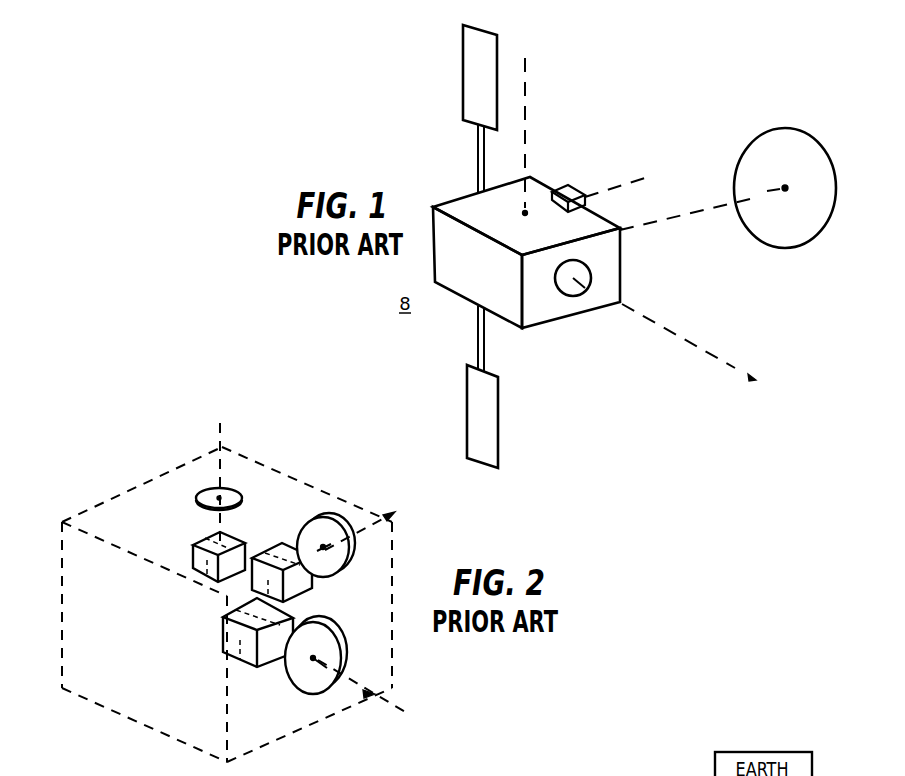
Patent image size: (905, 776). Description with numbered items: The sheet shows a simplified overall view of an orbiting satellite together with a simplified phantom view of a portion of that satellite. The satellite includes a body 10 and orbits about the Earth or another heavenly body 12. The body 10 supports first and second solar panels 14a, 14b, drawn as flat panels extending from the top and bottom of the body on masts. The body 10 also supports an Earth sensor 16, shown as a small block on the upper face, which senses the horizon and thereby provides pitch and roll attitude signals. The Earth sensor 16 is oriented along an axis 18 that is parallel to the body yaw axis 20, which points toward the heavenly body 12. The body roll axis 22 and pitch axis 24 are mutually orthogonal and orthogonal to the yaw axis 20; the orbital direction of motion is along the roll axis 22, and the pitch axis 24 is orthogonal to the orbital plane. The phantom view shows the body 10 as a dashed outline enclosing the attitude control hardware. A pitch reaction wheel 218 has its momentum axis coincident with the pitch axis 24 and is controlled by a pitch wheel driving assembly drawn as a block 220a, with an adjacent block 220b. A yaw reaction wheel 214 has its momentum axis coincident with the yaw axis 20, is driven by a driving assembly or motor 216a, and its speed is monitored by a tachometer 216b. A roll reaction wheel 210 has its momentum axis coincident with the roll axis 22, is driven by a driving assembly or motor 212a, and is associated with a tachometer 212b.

In FIG. 1, the body 10 is at (527, 328).
In FIG. 2, the body 10 is at (103, 500).
In FIG. 1, the Earth or another heavenly body 12 is at (806, 234).
In FIG. 1, the first solar panel 14a is at (467, 393).
In FIG. 1, the second solar panel 14b is at (463, 80).
In FIG. 1, the Earth sensor 16 is at (570, 185).
In FIG. 1, the axis 18 is at (652, 177).
In FIG. 1, the body yaw axis 20 is at (622, 233).
In FIG. 2, the body yaw axis 20 is at (394, 511).
In FIG. 1, the body roll axis 22 is at (663, 333).
In FIG. 2, the body roll axis 22 is at (398, 700).
In FIG. 1, the pitch axis 24 is at (528, 73).
In FIG. 2, the pitch axis 24 is at (224, 445).
In FIG. 1, the roll reaction wheel 210 is at (572, 292).
In FIG. 2, the roll reaction wheel 210 is at (306, 682).
In FIG. 2, the driving assembly or motor 212a is at (224, 653).
In FIG. 2, the tachometer 212b is at (222, 640).
In FIG. 2, the yaw reaction wheel 214 is at (322, 517).
In FIG. 2, the driving assembly or motor 216a is at (315, 553).
In FIG. 2, the tachometer 216b is at (302, 560).
In FIG. 2, the pitch reaction wheel 218 is at (213, 493).
In FIG. 2, the pitch wheel driving assembly 220a is at (188, 562).
In FIG. 2, the pitch gyro 220b is at (208, 578).